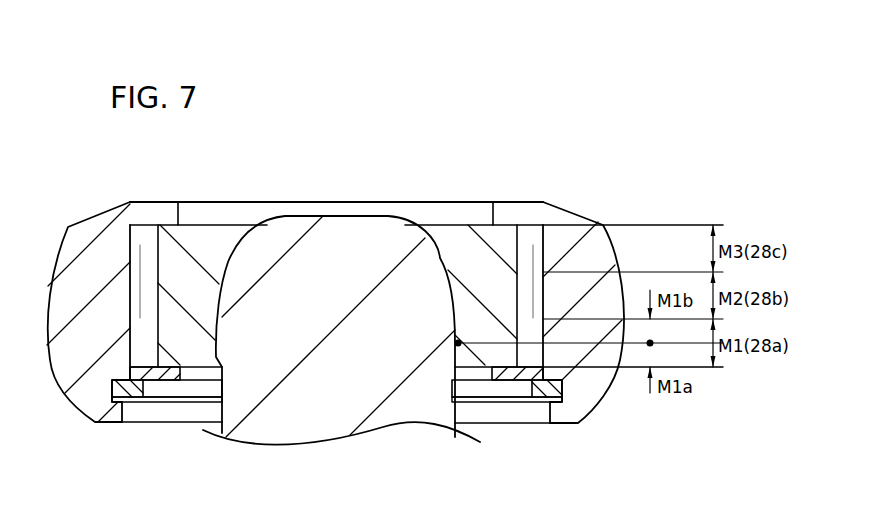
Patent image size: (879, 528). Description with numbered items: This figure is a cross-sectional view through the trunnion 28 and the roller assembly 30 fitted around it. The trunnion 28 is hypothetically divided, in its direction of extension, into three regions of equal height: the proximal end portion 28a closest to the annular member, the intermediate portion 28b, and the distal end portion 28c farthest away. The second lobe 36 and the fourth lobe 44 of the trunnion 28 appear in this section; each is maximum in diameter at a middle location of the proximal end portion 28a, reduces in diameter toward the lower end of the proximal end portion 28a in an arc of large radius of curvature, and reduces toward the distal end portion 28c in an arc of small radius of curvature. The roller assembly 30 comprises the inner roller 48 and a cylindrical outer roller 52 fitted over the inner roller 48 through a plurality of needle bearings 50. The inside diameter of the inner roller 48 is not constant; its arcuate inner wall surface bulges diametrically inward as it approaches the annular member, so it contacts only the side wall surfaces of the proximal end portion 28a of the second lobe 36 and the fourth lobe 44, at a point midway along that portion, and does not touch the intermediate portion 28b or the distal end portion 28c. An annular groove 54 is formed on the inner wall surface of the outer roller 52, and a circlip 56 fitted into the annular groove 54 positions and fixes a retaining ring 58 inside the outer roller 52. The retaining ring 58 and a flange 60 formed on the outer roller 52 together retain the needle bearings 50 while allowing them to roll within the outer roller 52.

The trunnion 28 is at (381, 253).
The proximal end portion 28a is at (337, 412).
The intermediate portion 28b is at (298, 292).
The distal end portion 28c is at (330, 228).
The roller assembly 30 is at (562, 204).
The second lobe 36 is at (210, 316).
The fourth lobe 44 is at (458, 322).
The inner roller 48 is at (473, 260).
The needle bearings 50 is at (148, 335).
The outer roller 52 is at (597, 247).
The annular groove 54 is at (132, 390).
The circlip 56 is at (183, 388).
The retaining ring 58 is at (503, 377).
The flange 60 is at (513, 217).